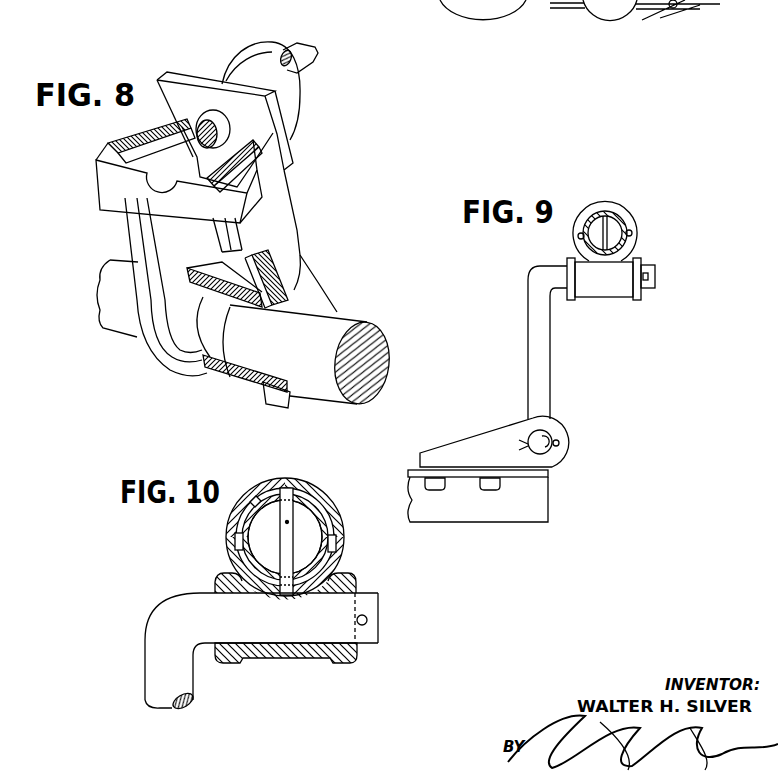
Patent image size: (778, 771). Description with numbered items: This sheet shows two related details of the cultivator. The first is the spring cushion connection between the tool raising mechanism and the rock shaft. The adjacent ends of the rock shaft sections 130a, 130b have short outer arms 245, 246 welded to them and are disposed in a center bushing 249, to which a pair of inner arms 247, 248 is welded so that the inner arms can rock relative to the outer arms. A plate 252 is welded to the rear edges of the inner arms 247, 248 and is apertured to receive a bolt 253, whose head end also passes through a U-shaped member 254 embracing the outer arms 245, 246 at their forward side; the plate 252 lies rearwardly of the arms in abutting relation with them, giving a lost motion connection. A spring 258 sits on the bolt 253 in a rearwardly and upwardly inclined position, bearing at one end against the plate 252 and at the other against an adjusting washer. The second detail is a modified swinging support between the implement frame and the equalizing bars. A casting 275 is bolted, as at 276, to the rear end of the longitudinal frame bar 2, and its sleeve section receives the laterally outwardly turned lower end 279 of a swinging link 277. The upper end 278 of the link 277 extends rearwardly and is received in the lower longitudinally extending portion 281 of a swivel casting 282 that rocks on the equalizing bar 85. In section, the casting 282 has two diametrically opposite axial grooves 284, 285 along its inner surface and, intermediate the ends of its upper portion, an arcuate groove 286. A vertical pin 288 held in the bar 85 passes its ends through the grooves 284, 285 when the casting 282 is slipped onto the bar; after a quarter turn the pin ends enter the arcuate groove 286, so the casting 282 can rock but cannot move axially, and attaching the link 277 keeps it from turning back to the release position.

In FIG. 8, the rock shaft section 130a is at (333, 327).
In FIG. 8, the rock shaft section 130b is at (108, 290).
In FIG. 8, the short arm 245 is at (290, 255).
In FIG. 8, the short arm 246 is at (142, 250).
In FIG. 8, the inner arm 247 is at (255, 262).
In FIG. 8, the inner arm 248 is at (143, 223).
In FIG. 8, the center bushing 249 is at (235, 378).
In FIG. 8, the plate 252 is at (262, 125).
In FIG. 8, the bolt 253 is at (217, 118).
In FIG. 8, the U-shaped member 254 is at (120, 180).
In FIG. 8, the spring 258 is at (290, 102).
In FIG. 9, the longitudinal frame bar 2 is at (535, 490).
In FIG. 9, the equalizing bar 85 is at (634, 248).
In FIG. 10, the equalizing bar 85 is at (338, 518).
In FIG. 9, the casting 275 is at (487, 443).
In FIG. 9, the bolts 276 is at (490, 490).
In FIG. 9, the swinging link 277 is at (540, 362).
In FIG. 10, the swinging link 277 is at (170, 687).
In FIG. 9, the upper end of link 278 is at (655, 268).
In FIG. 10, the upper end of link 278 is at (282, 625).
In FIG. 9, the lower end of link 279 is at (540, 452).
In FIG. 9, the lower longitudinally extending portion 281 is at (613, 283).
In FIG. 10, the lower longitudinally extending portion 281 is at (320, 648).
In FIG. 9, the swivel casting 282 is at (620, 212).
In FIG. 10, the swivel casting 282 is at (310, 497).
In FIG. 9, the axial groove 284 is at (578, 237).
In FIG. 10, the axial groove 284 is at (237, 538).
In FIG. 9, the axial groove 285 is at (637, 230).
In FIG. 10, the axial groove 285 is at (340, 545).
In FIG. 10, the arcuate groove 286 is at (253, 500).
In FIG. 10, the pin 288 is at (288, 522).